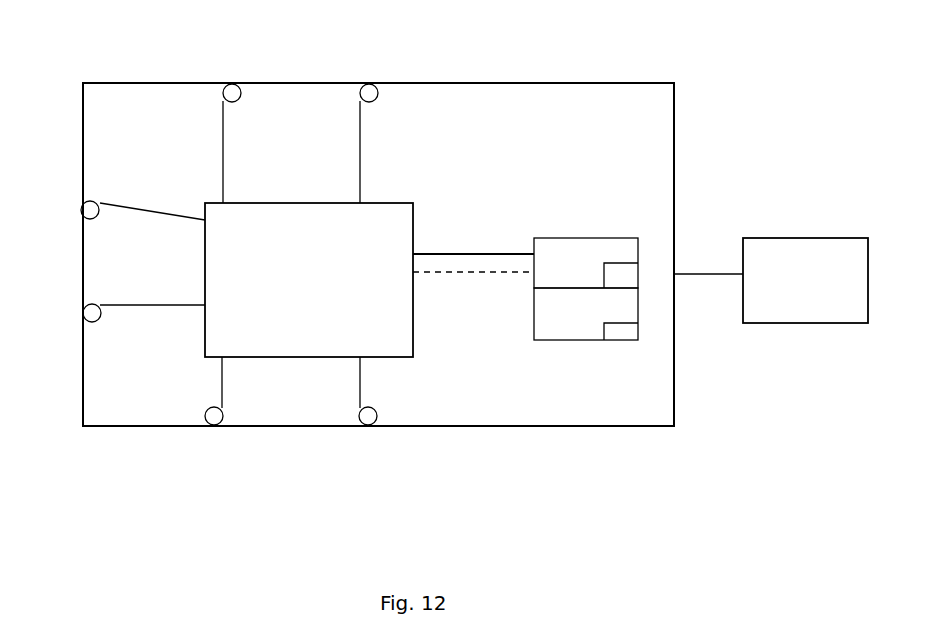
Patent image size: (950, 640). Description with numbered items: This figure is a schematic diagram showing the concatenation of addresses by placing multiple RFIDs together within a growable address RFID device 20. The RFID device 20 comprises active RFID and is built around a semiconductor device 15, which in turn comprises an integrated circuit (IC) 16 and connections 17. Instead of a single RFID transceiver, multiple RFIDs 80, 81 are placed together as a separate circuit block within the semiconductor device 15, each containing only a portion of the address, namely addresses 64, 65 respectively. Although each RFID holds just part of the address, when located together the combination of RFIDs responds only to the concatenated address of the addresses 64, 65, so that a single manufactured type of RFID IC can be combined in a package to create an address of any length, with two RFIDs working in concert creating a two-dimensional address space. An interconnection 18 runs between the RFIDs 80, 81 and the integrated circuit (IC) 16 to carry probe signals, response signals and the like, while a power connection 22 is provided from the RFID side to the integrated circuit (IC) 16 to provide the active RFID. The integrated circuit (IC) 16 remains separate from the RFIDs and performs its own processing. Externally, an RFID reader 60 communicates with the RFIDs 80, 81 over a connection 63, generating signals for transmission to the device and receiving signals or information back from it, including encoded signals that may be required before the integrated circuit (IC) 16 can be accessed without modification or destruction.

The RFID device 20 is at (158, 74).
The semiconductor device 15 is at (527, 436).
The integrated circuit (IC) 16 is at (316, 350).
The connections 17 is at (124, 215).
The power connection 22 is at (455, 250).
The interconnection 18 is at (468, 278).
The RFID 80 is at (613, 240).
The RFID 81 is at (535, 325).
The address 64 is at (630, 285).
The address 65 is at (620, 341).
The connection 63 is at (693, 274).
The RFID reader 60 is at (778, 243).